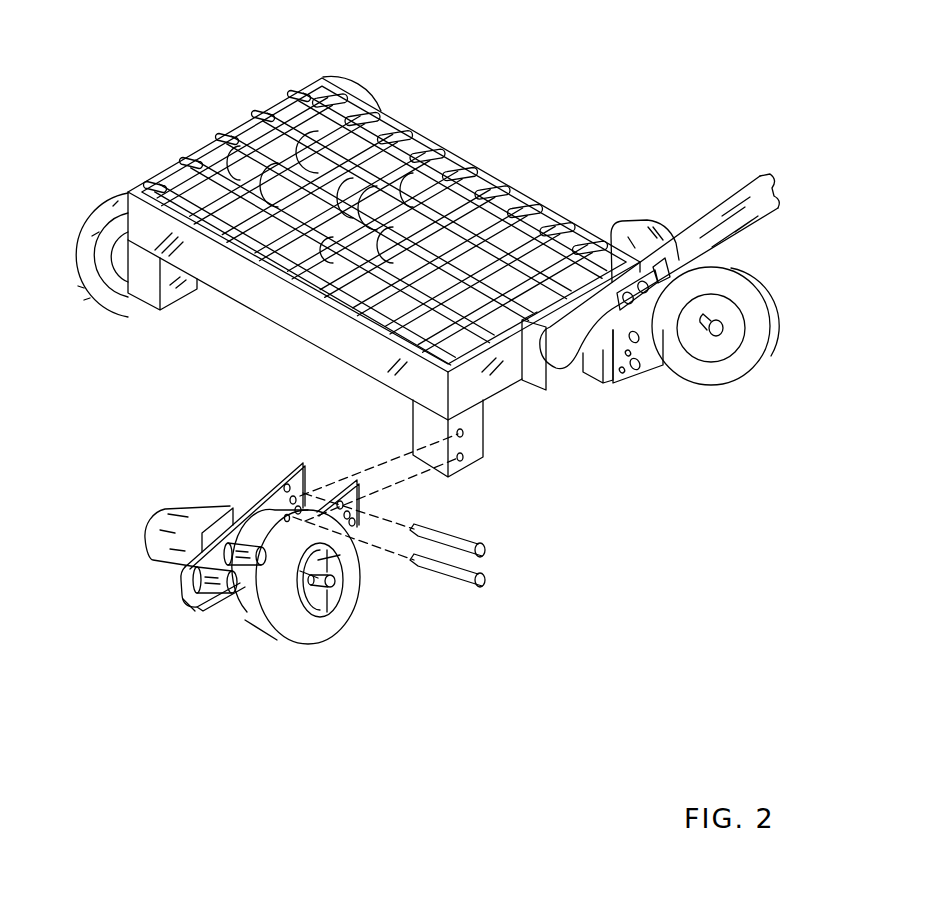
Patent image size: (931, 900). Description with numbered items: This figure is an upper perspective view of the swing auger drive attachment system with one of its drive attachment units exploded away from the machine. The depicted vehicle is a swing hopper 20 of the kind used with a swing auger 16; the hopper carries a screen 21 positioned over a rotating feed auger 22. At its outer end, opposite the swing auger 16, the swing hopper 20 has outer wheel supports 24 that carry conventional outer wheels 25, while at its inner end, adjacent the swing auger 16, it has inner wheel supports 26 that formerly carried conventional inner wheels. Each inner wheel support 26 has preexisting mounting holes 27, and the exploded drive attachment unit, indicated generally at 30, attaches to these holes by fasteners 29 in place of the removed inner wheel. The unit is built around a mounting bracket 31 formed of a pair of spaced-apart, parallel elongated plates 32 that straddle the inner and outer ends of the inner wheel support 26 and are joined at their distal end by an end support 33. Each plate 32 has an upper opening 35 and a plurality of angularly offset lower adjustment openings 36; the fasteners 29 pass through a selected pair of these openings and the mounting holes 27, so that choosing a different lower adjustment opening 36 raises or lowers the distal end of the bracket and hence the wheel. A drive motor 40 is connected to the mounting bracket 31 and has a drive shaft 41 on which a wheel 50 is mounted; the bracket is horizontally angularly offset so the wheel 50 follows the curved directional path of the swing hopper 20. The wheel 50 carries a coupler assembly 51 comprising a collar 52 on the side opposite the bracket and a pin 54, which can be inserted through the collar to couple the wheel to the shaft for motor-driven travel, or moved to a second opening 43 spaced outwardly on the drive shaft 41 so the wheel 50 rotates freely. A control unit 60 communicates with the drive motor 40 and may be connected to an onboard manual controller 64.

The swing auger 16 is at (752, 182).
The swing hopper 20 is at (477, 160).
The screen 21 is at (502, 220).
The feed auger 22 is at (227, 153).
The outer wheel support 24 is at (148, 310).
The outer wheel 25 is at (332, 78).
The inner wheel support 26 is at (590, 365).
The mounting hole 27 is at (462, 457).
The fastener 29 is at (483, 540).
The drive caster assembly 30 is at (757, 392).
The mounting bracket 31 is at (176, 594).
The elongated plate 32 is at (192, 557).
The end support 33 is at (196, 610).
The upper opening 35 is at (288, 480).
The lower adjustment opening 36 is at (623, 370).
The drive motor 40 is at (628, 222).
The drive shaft 41 is at (343, 558).
The second opening 43 is at (337, 587).
The wheel 50 is at (753, 337).
The coupler assembly 51 is at (327, 608).
The collar 52 is at (335, 572).
The pin 54 is at (323, 627).
The control unit 60 is at (203, 530).
The onboard manual controller 64 is at (675, 262).